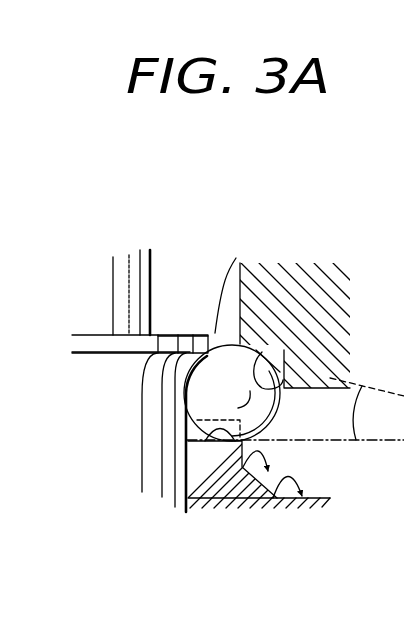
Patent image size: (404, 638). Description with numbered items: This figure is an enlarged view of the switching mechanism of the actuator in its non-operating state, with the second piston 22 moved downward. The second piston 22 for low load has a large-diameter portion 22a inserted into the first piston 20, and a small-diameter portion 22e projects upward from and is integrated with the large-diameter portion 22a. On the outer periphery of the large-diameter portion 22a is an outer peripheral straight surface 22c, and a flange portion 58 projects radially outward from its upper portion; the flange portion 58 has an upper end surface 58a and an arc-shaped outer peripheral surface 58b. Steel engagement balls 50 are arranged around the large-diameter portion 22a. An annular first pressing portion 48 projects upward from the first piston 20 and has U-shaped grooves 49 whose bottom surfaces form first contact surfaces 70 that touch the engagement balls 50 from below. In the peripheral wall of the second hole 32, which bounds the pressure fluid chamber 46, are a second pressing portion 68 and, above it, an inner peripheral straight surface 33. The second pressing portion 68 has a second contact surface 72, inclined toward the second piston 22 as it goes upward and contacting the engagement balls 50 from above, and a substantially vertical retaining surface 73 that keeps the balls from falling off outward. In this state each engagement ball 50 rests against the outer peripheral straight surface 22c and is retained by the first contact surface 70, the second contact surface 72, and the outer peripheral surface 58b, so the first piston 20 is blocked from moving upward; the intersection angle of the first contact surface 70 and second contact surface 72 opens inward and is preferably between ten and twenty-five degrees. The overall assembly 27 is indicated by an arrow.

The first piston 20 is at (256, 499).
The second piston 22 is at (157, 281).
The large-diameter portion 22a is at (162, 466).
The outer peripheral straight surface 22c is at (189, 405).
The small-diameter portion 22e is at (133, 251).
The valve assembly 27 is at (313, 167).
The second hole 32 is at (236, 258).
The inner peripheral straight surface 33 is at (235, 296).
The pressure fluid chamber 46 is at (205, 298).
The first pressing portion 48 is at (237, 470).
The U-shaped grooves 49 is at (167, 433).
The engagement balls 50 is at (198, 396).
The flange portion 58 is at (215, 334).
The upper end surface 58a is at (193, 335).
The outer peripheral surface 58b is at (167, 367).
The second pressing portion 68 is at (349, 359).
The first contact surfaces 70 is at (176, 463).
The second contact surface 72 is at (265, 355).
The retaining surface 73 is at (300, 358).